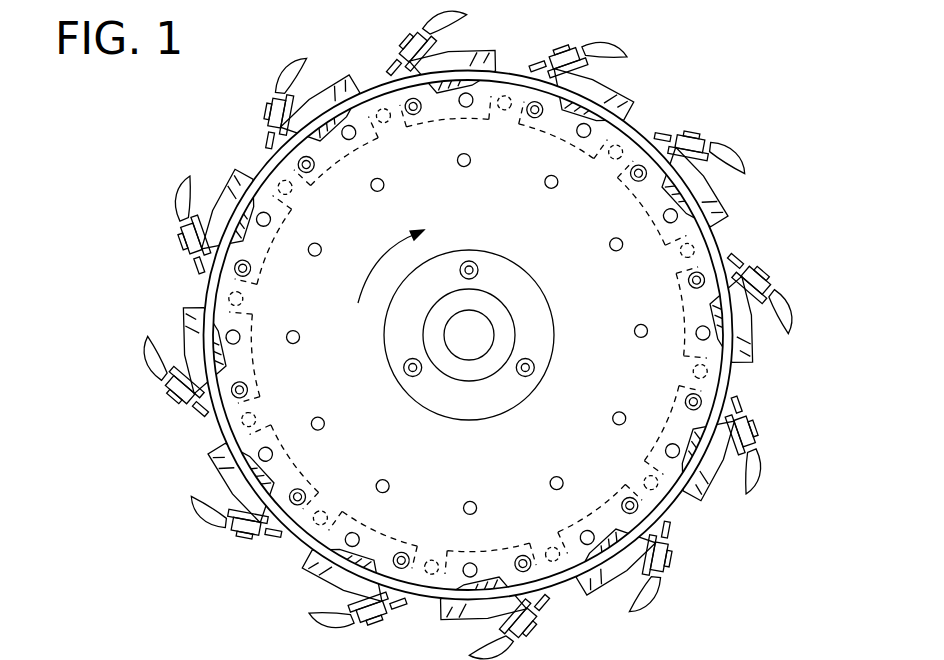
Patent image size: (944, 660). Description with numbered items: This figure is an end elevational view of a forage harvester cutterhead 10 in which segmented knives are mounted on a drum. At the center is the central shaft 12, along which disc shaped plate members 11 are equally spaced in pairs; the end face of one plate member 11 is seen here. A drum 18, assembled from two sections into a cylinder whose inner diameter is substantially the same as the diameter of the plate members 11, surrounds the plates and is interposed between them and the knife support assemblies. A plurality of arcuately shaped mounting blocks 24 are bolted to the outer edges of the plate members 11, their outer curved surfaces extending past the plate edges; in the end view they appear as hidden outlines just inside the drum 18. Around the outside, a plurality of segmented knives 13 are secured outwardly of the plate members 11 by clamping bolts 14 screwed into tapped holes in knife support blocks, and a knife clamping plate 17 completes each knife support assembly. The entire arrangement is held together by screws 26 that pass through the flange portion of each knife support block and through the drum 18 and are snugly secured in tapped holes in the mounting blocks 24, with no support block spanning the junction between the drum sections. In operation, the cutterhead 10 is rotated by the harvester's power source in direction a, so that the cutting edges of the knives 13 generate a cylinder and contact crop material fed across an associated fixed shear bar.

The forage harvester cutterhead 10 is at (140, 98).
The disc shaped plate member 11 is at (474, 223).
The central shaft 12 is at (480, 332).
The segmented knife 13 is at (465, 15).
The clamping bolt 14 is at (262, 108).
The knife clamping plate 17 is at (284, 92).
The drum 18 is at (722, 242).
The mounting block 24 is at (491, 120).
The screw 26 is at (326, 88).